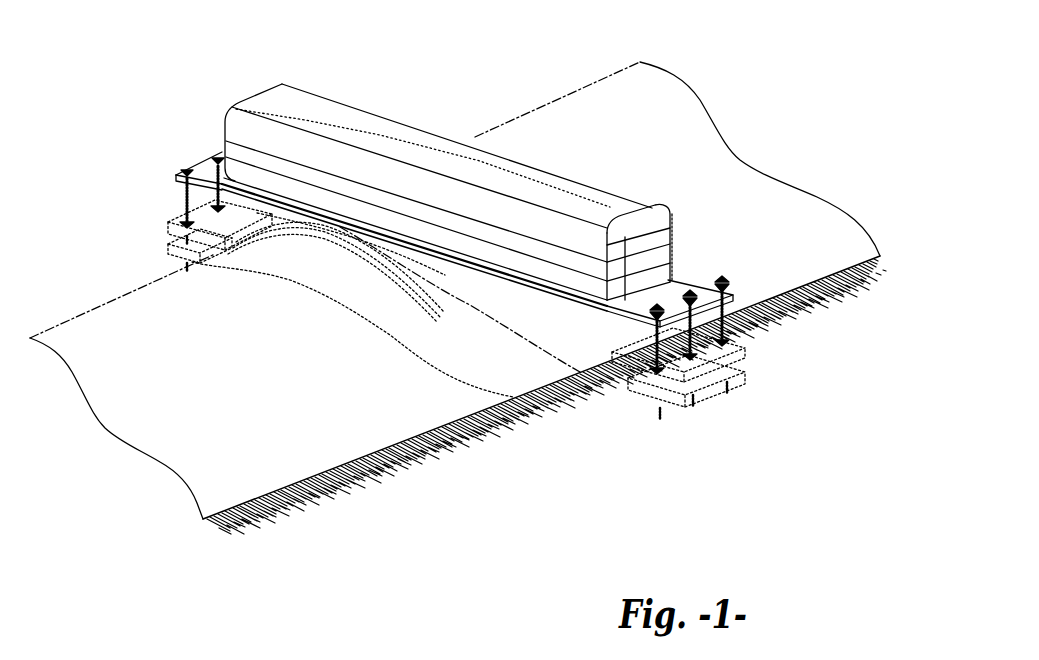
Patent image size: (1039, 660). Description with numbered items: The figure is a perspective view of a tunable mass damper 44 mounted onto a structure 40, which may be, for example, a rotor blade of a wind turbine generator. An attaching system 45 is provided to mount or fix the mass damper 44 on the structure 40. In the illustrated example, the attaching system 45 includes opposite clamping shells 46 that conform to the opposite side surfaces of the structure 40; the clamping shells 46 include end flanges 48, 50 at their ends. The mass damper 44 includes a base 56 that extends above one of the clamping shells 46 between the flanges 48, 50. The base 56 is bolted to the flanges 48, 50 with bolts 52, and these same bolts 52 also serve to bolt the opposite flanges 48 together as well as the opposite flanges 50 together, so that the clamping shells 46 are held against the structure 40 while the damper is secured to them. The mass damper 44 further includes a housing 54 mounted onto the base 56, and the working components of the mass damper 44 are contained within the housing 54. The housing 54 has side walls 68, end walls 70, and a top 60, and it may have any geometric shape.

The structure 40 is at (558, 120).
The mass damper 44 is at (233, 80).
The attaching system 45 is at (486, 346).
The clamping shells 46 is at (197, 255).
The end flanges 48 is at (175, 228).
The end flanges 50 is at (715, 360).
The bolts 52 is at (188, 182).
The housing 54 is at (312, 116).
The base 56 is at (200, 157).
The top 60 is at (578, 188).
The side walls 68 is at (358, 212).
The end walls 70 is at (672, 228).